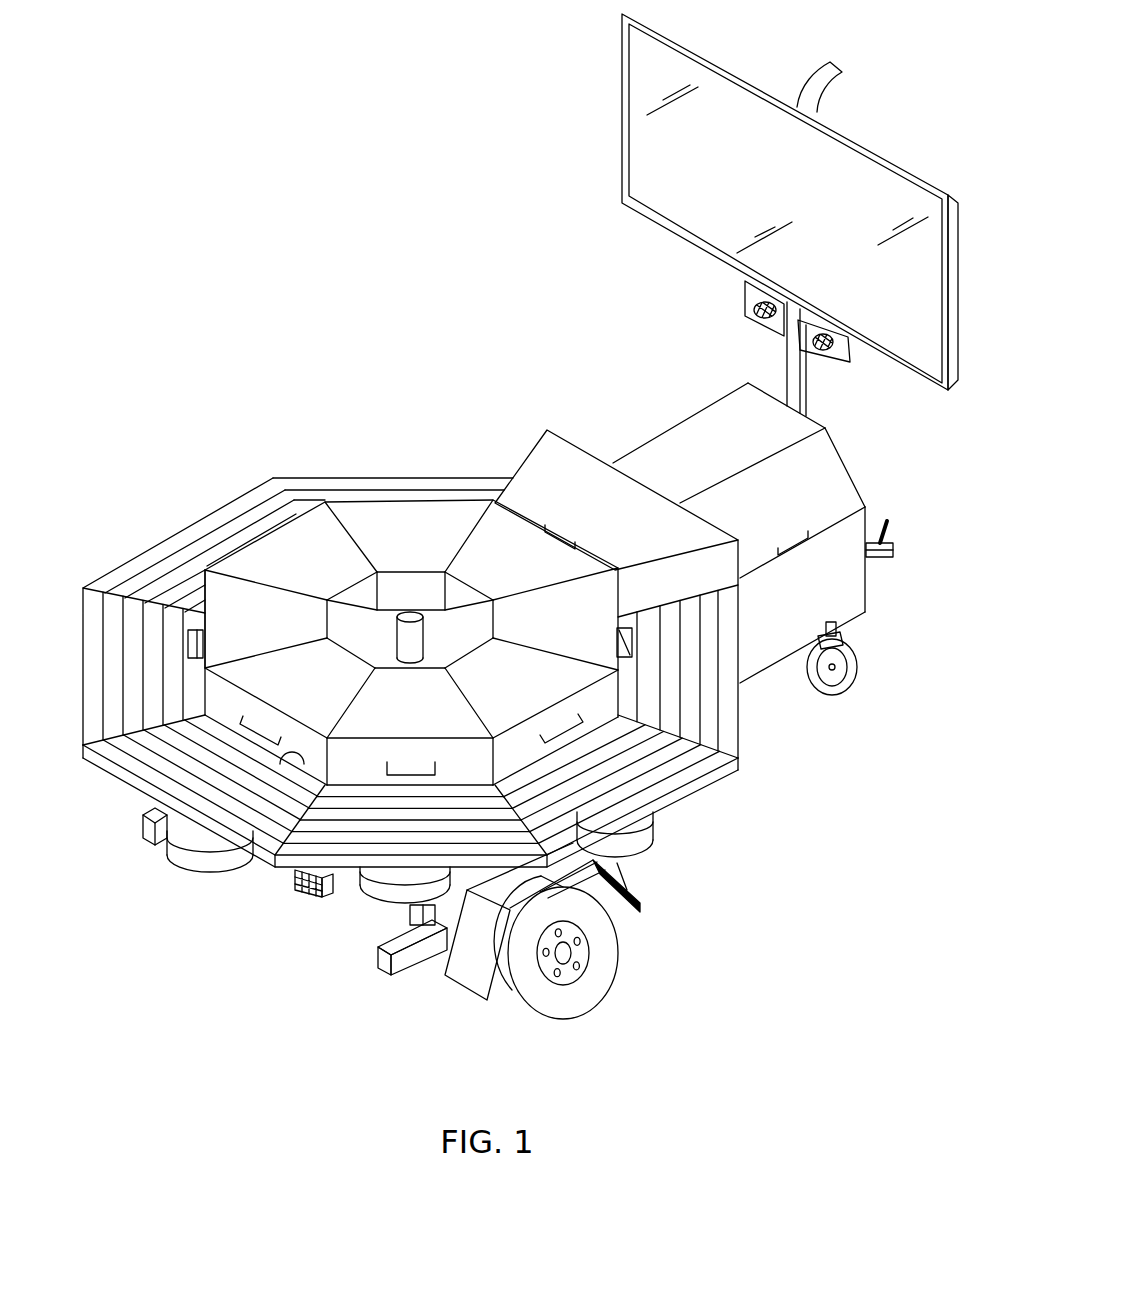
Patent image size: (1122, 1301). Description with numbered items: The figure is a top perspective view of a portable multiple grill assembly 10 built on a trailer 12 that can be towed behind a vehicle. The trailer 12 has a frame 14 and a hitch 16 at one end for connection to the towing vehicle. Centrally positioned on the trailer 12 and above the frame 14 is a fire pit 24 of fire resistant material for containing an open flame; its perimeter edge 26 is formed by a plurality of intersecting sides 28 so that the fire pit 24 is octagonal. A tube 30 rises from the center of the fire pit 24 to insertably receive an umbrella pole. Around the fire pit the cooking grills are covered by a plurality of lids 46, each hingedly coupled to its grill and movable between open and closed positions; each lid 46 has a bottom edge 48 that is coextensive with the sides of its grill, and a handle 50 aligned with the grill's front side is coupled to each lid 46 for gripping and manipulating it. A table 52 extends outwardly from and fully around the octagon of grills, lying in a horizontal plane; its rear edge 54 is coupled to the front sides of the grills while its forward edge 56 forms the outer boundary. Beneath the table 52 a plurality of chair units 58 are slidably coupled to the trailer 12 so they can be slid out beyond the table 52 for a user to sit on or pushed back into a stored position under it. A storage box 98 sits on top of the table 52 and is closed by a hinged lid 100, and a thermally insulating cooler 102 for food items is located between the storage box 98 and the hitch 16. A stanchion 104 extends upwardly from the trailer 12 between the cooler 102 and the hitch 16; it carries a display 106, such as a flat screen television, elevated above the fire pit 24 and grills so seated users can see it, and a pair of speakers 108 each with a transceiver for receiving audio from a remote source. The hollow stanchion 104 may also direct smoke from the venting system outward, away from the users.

The portable multiple grill assembly 10 is at (240, 215).
The trailer 12 is at (662, 889).
The frame 14 is at (408, 962).
The hitch 16 is at (890, 548).
The fire pit 24 is at (407, 568).
The perimeter edge 26 is at (405, 635).
The intersecting sides 28 is at (467, 627).
The tube 30 is at (340, 596).
The lids 46 is at (270, 560).
The bottom edge 48 is at (345, 787).
The handles 50 is at (577, 722).
The table 52 is at (83, 682).
The rear edge 54 is at (283, 762).
The forward edge 56 is at (132, 781).
The chair units 58 is at (197, 897).
The storage box 98 is at (636, 470).
The lid 100 is at (556, 452).
The cooler 102 is at (835, 490).
The stanchion 104 is at (793, 362).
The display 106 is at (620, 146).
The speakers 108 is at (750, 298).